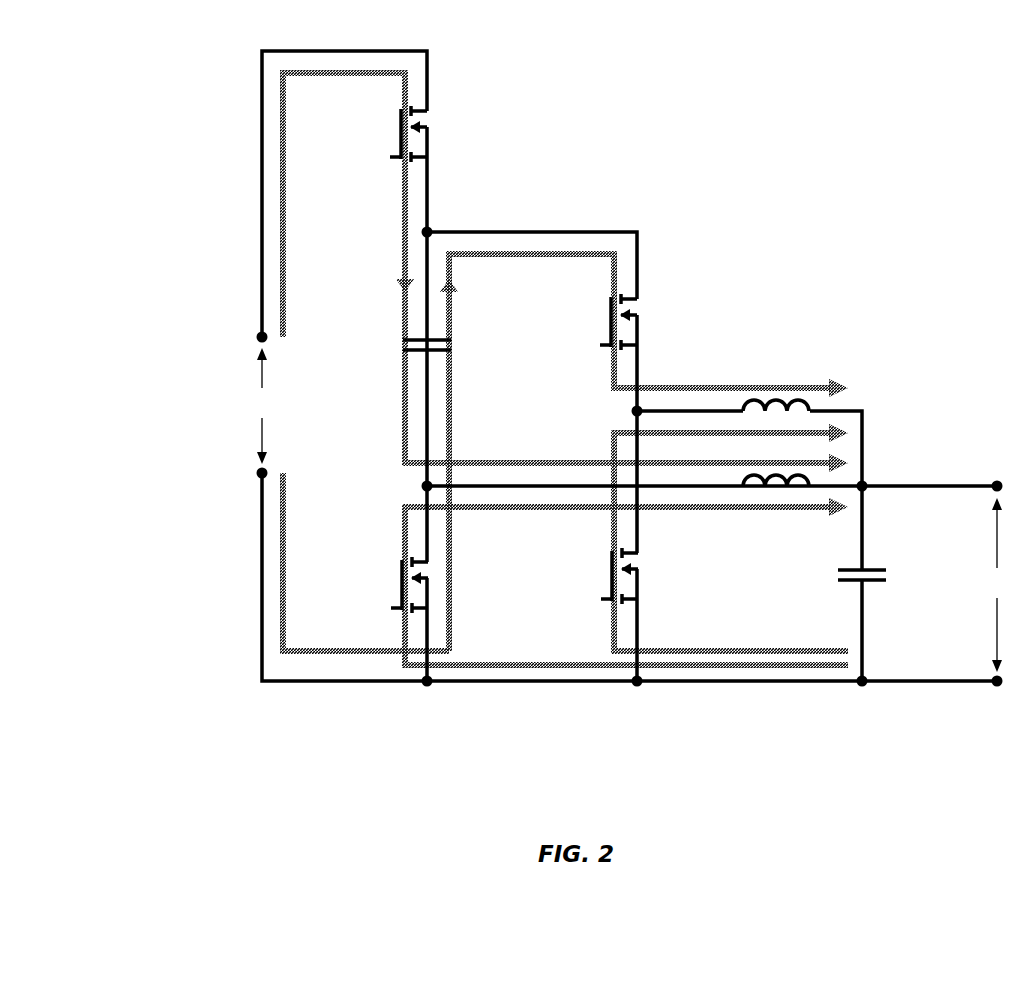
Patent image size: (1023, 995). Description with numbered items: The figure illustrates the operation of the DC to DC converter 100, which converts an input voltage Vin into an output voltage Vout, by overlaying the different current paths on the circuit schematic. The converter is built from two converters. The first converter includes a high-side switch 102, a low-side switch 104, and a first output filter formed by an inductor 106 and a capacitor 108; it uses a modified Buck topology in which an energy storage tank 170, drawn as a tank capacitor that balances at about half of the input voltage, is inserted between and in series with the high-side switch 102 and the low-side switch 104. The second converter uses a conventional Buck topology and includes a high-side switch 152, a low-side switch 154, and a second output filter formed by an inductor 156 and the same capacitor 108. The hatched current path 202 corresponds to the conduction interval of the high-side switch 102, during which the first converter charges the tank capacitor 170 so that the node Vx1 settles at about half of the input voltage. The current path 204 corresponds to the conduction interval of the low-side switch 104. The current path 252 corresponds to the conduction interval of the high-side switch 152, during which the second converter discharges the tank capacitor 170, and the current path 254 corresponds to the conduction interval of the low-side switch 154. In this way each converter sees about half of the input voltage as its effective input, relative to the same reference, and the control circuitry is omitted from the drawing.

The DC to DC converter 100 is at (808, 151).
The high-side switch 102 is at (401, 128).
The low-side switch 104 is at (402, 580).
The inductor 106 is at (776, 471).
The capacitor 108 is at (848, 567).
The high-side switch 152 is at (611, 318).
The low-side switch 154 is at (612, 583).
The inductor 156 is at (776, 396).
The energy storage tank 170 is at (405, 338).
The current path 202 is at (283, 230).
The current path 204 is at (403, 532).
The current path 252 is at (450, 403).
The current path 254 is at (613, 622).